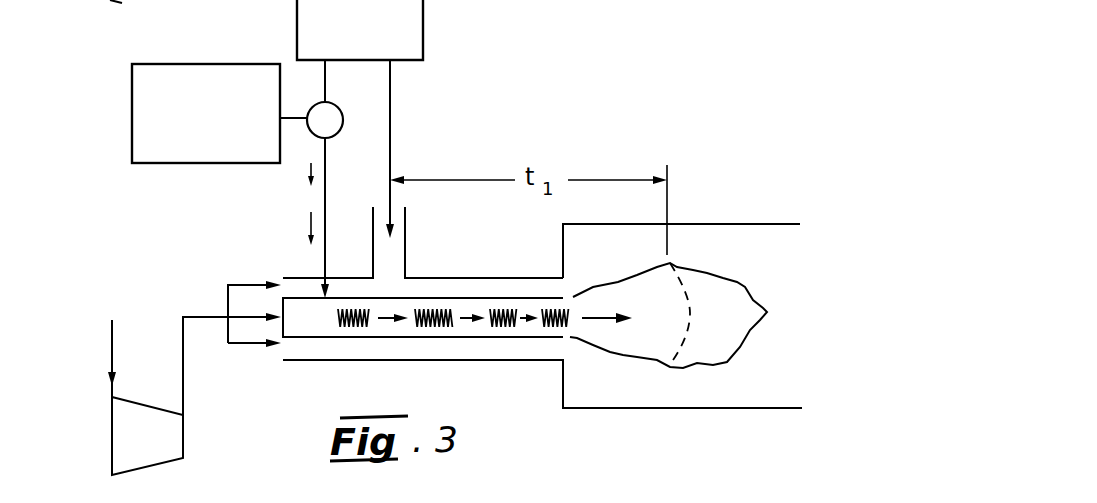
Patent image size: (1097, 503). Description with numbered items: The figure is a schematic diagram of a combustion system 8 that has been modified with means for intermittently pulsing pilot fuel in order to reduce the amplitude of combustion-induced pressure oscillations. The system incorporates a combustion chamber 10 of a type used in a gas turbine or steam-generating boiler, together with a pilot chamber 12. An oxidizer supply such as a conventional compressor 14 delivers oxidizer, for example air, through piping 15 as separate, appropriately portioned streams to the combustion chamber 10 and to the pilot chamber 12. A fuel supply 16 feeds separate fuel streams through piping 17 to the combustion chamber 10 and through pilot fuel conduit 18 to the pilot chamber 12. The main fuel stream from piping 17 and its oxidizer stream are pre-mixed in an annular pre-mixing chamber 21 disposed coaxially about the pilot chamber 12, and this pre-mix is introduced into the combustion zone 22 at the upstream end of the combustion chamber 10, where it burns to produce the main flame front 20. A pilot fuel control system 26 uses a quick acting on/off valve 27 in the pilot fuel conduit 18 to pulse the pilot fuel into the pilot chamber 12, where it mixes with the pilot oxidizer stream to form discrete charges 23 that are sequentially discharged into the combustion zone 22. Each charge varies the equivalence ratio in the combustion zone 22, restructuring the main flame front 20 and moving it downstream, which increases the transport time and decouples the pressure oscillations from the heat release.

The combustion system 8 is at (237, 233).
The combustion chamber 10 is at (732, 223).
The pilot chamber 12 is at (425, 337).
The compressor 14 is at (148, 460).
The piping 15 is at (183, 388).
The fuel supply 16 is at (423, 36).
The piping 17 is at (390, 97).
The pilot fuel conduit 18 is at (325, 197).
The main flame front 20 is at (687, 313).
The annular pre-mixing chamber 21 is at (431, 276).
The combustion zone 22 is at (625, 262).
The discrete pilot fuel-oxidizer charges 23 is at (503, 312).
The pilot fuel control system 26 is at (132, 130).
The quick acting on/off valve 27 is at (338, 132).